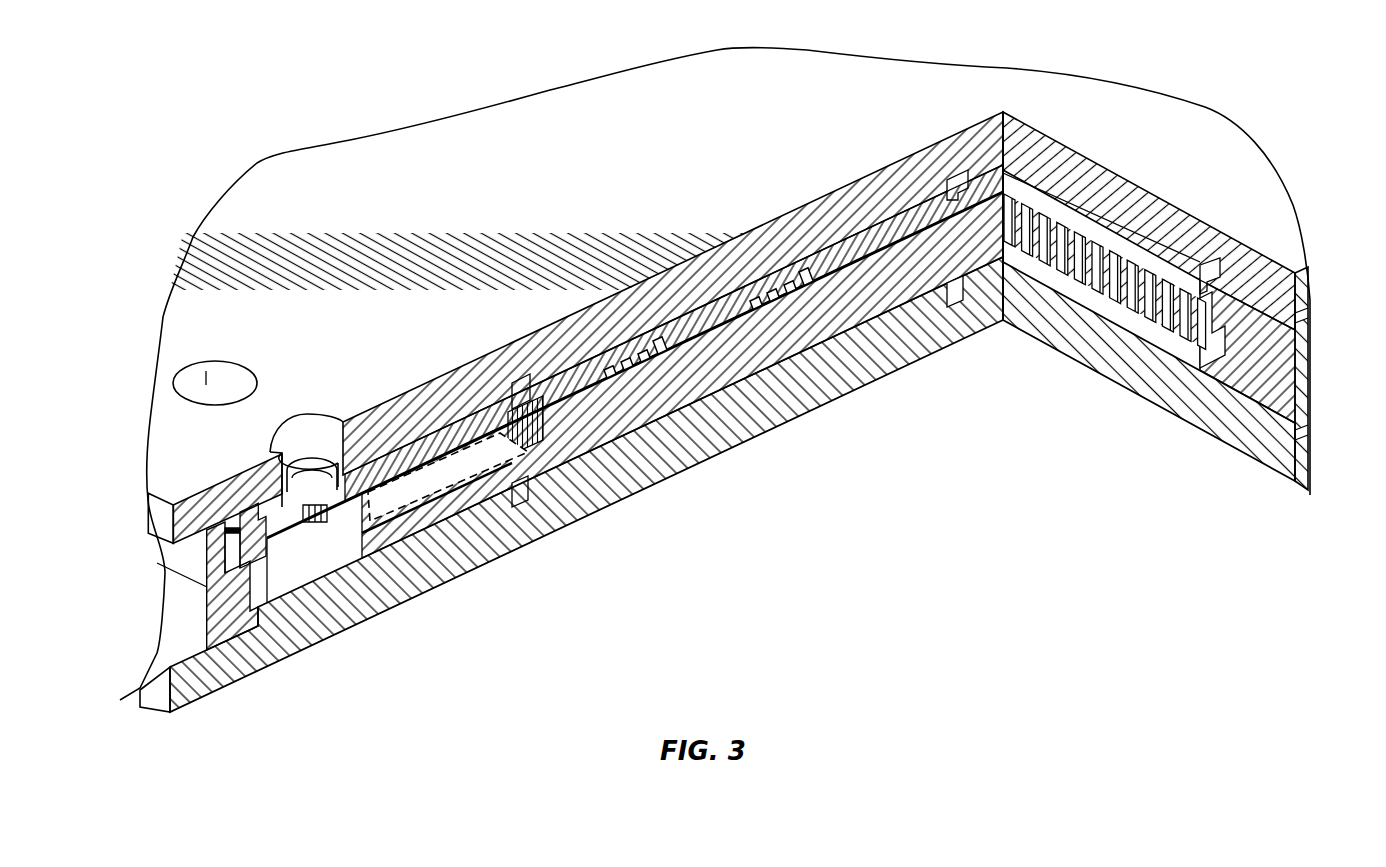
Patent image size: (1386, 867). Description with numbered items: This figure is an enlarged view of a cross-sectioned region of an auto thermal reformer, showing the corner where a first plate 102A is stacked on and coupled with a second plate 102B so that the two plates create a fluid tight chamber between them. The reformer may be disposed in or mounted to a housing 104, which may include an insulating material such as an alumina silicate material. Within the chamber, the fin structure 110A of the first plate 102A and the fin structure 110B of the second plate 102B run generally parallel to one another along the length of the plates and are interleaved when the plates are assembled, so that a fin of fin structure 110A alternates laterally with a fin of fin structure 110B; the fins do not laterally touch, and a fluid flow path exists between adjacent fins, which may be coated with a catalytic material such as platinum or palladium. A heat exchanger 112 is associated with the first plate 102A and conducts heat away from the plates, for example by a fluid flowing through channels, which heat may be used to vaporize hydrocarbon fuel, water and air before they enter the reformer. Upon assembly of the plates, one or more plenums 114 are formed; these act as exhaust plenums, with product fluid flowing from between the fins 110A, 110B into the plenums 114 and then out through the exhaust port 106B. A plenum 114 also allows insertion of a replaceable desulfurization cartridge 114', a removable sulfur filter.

The first plate 102A is at (203, 557).
The second plate 102B is at (1300, 440).
The housing 104 is at (323, 640).
The port 106B is at (293, 430).
The fin structure 110A is at (1190, 322).
The fin structure 110B is at (1114, 354).
The heat exchanger 112 is at (657, 353).
The plenum 114 is at (614, 433).
The desulfurization cartridge 114' is at (488, 528).